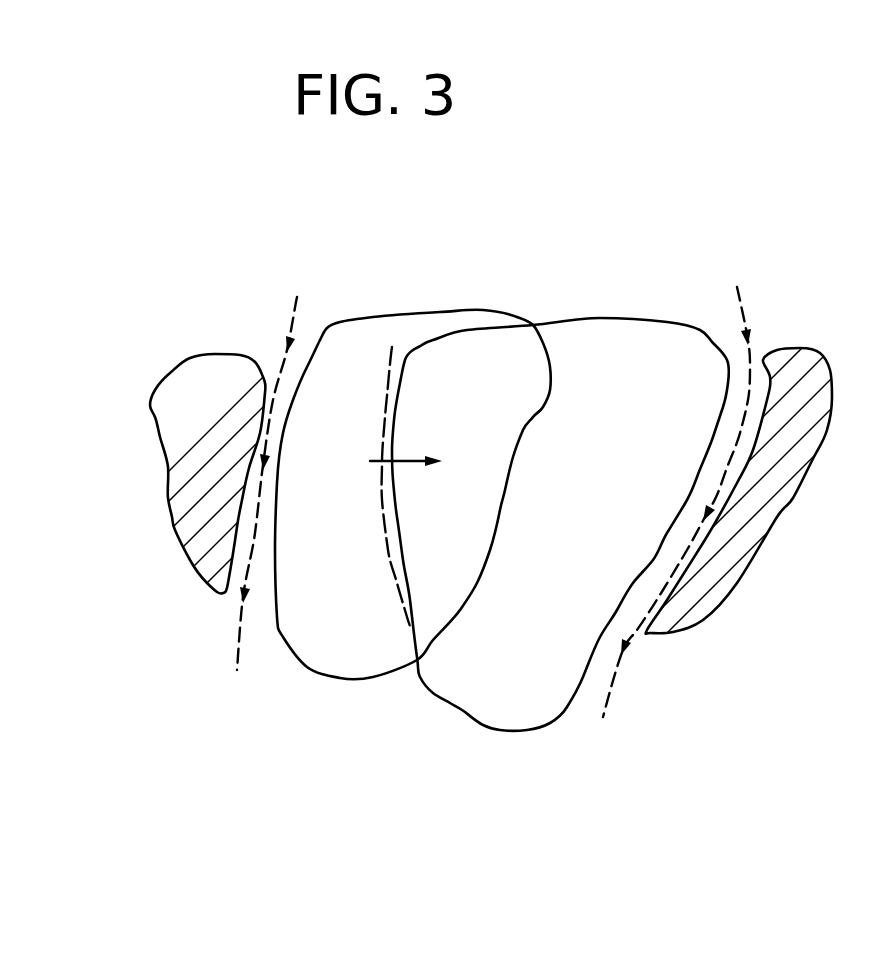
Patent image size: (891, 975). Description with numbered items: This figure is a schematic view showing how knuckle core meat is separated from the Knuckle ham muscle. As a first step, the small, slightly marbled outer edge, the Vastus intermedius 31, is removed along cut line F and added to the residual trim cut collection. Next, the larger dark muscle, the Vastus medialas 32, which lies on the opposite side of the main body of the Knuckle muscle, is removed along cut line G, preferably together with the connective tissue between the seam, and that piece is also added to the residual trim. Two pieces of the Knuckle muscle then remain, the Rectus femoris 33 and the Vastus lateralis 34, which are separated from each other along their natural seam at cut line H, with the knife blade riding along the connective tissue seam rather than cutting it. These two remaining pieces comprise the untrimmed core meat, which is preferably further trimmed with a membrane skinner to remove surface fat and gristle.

The outer edge (Vastus intermedius) 31 is at (763, 530).
The dark muscle (Vastus medialas) 32 is at (190, 545).
The Rectus femoris 33 is at (375, 342).
The Vastus lateralis 34 is at (597, 353).
The cut line G is at (272, 469).
The cut line F is at (677, 487).
The cut line H is at (398, 460).